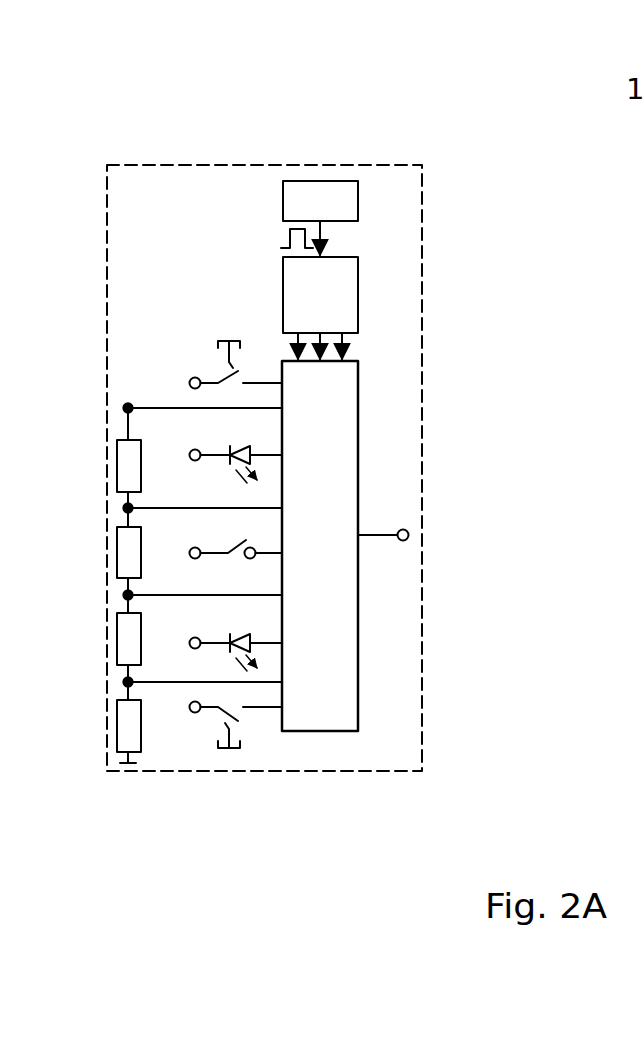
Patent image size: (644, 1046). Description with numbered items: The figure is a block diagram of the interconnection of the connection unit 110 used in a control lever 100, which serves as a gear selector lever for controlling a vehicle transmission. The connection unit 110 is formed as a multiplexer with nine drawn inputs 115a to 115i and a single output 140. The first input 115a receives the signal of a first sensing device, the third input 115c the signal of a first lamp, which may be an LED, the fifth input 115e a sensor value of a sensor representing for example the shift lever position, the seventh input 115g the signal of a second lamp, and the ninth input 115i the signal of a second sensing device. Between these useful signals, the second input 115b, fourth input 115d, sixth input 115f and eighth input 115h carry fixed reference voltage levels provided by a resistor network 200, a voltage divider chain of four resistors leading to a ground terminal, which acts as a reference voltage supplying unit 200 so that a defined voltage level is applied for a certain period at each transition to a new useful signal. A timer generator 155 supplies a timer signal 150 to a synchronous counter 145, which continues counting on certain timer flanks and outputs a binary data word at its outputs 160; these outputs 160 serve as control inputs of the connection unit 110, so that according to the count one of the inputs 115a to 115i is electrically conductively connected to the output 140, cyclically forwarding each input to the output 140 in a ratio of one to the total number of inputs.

The control lever 100 is at (422, 209).
The connection unit 110 is at (358, 512).
The first input 115a is at (210, 382).
The second input 115b is at (268, 405).
The third input 115c is at (282, 452).
The fourth input 115d is at (282, 505).
The fifth input 115e is at (282, 550).
The sixth input 115f is at (282, 595).
The seventh input 115g is at (282, 640).
The eighth input 115h is at (282, 682).
The ninth input 115i is at (272, 718).
The output 140 is at (378, 538).
The synchronous counter 145 is at (358, 323).
The timer signal 150 is at (323, 236).
The timer generator 155 is at (341, 181).
The outputs of the synchronous counter 160 is at (362, 344).
The resistor network 200 is at (118, 390).